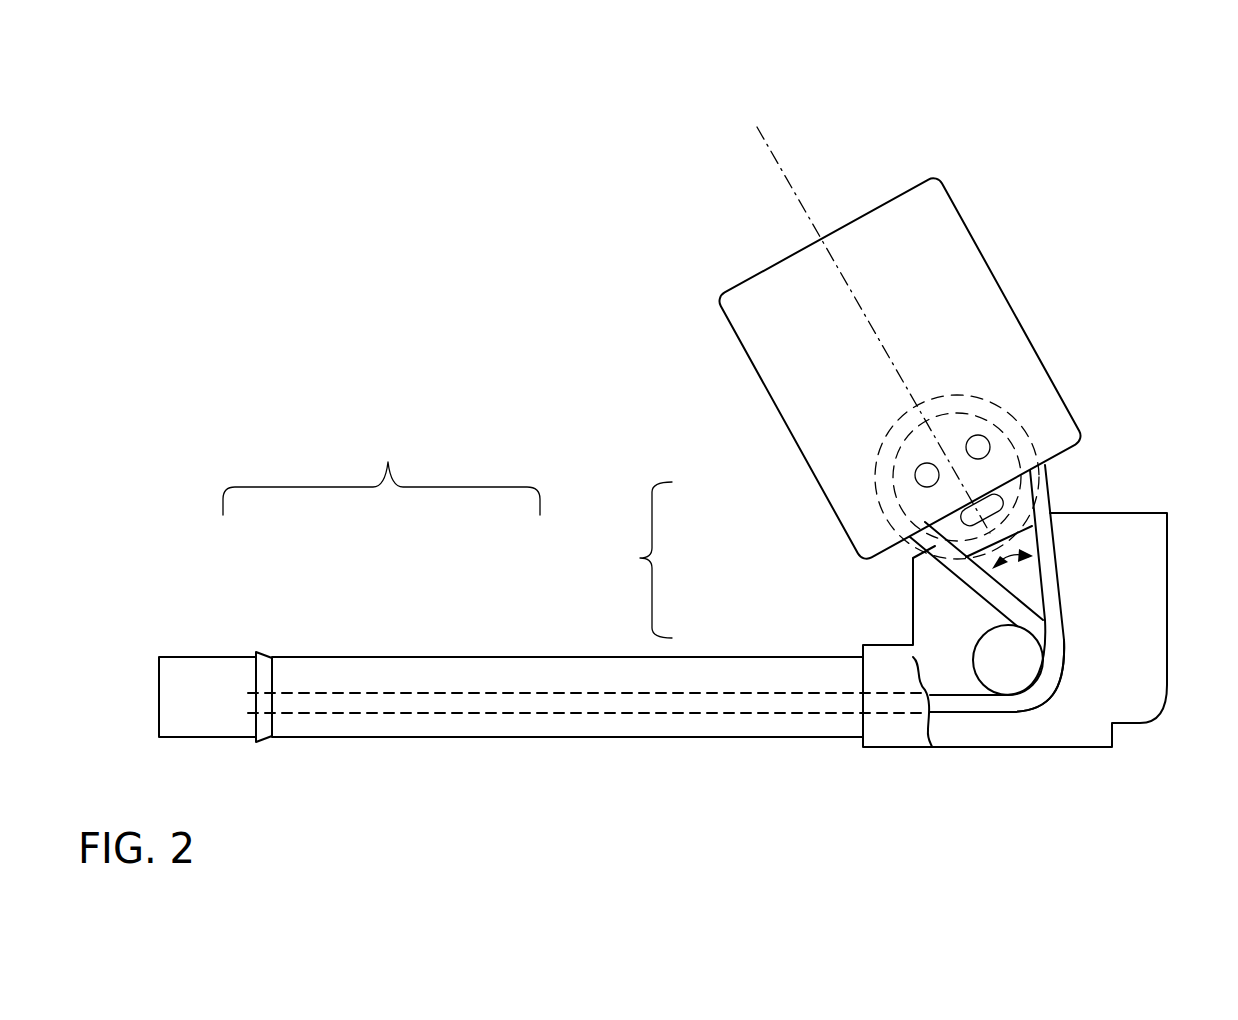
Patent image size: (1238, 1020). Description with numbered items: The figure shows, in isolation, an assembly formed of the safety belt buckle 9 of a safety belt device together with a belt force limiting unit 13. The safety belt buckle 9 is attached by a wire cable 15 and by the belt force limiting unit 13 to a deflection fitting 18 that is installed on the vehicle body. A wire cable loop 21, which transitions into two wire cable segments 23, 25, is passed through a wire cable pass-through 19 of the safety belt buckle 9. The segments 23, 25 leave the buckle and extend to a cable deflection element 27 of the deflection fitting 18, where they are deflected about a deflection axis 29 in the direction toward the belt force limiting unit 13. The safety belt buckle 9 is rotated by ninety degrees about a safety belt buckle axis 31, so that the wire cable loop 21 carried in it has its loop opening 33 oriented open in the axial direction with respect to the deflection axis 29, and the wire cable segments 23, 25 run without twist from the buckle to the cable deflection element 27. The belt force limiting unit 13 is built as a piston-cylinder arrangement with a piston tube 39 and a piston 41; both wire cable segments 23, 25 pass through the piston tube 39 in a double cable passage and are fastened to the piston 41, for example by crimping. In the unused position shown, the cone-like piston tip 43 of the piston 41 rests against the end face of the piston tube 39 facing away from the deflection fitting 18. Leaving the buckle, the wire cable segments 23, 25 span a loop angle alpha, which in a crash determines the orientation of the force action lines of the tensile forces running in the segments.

The safety belt buckle 9 is at (880, 207).
The belt force limiting unit 13 is at (381, 471).
The wire cable 15 is at (634, 560).
The deflection fitting 18 is at (1103, 612).
The wire cable pass-through 19 is at (1114, 470).
The wire cable loop 21 is at (880, 500).
The wire cable segment 23 is at (955, 567).
The wire cable segment 25 is at (1048, 583).
The cable deflection element 27 is at (1085, 686).
The deflection axis 29 is at (1010, 660).
The safety belt buckle axis 31 is at (773, 160).
The loop opening 33 is at (902, 453).
The piston tube 39 is at (343, 658).
The piston 41 is at (196, 667).
The piston tip 43 is at (264, 667).
The loop angle alpha is at (1007, 557).